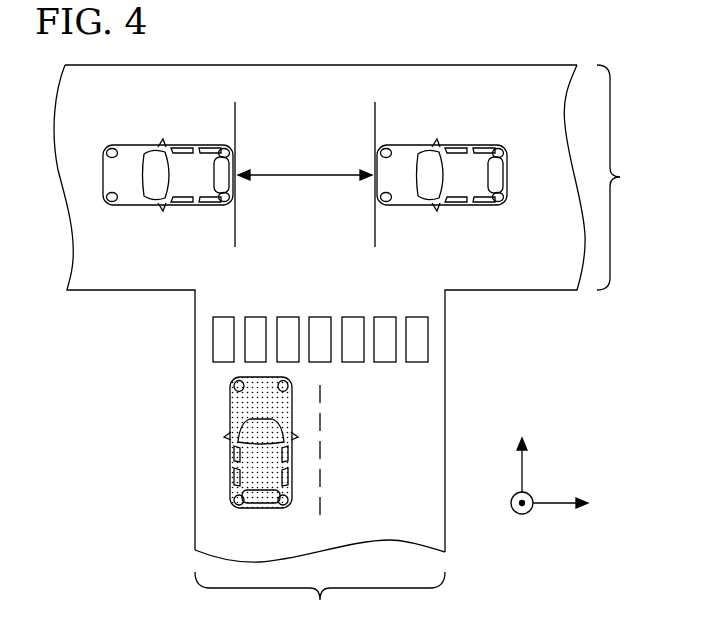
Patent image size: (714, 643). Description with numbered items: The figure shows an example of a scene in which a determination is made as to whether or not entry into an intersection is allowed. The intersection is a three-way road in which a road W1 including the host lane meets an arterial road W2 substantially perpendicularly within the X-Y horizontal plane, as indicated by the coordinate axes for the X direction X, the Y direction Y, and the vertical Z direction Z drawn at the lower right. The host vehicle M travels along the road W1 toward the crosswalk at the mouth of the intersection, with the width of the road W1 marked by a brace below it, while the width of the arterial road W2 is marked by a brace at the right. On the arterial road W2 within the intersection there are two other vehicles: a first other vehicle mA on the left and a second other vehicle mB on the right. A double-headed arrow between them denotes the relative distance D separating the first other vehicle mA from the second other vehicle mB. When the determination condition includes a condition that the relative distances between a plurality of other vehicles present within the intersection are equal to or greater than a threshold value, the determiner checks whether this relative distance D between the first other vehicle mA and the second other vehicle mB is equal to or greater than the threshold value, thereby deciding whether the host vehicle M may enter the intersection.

The first other vehicle mA is at (175, 140).
The second other vehicle mB is at (445, 140).
The relative distance D is at (305, 189).
The road W1 is at (320, 604).
The arterial road W2 is at (629, 177).
The host vehicle M is at (230, 437).
The X direction X is at (521, 450).
The Y direction Y is at (572, 503).
The Z direction Z is at (513, 516).